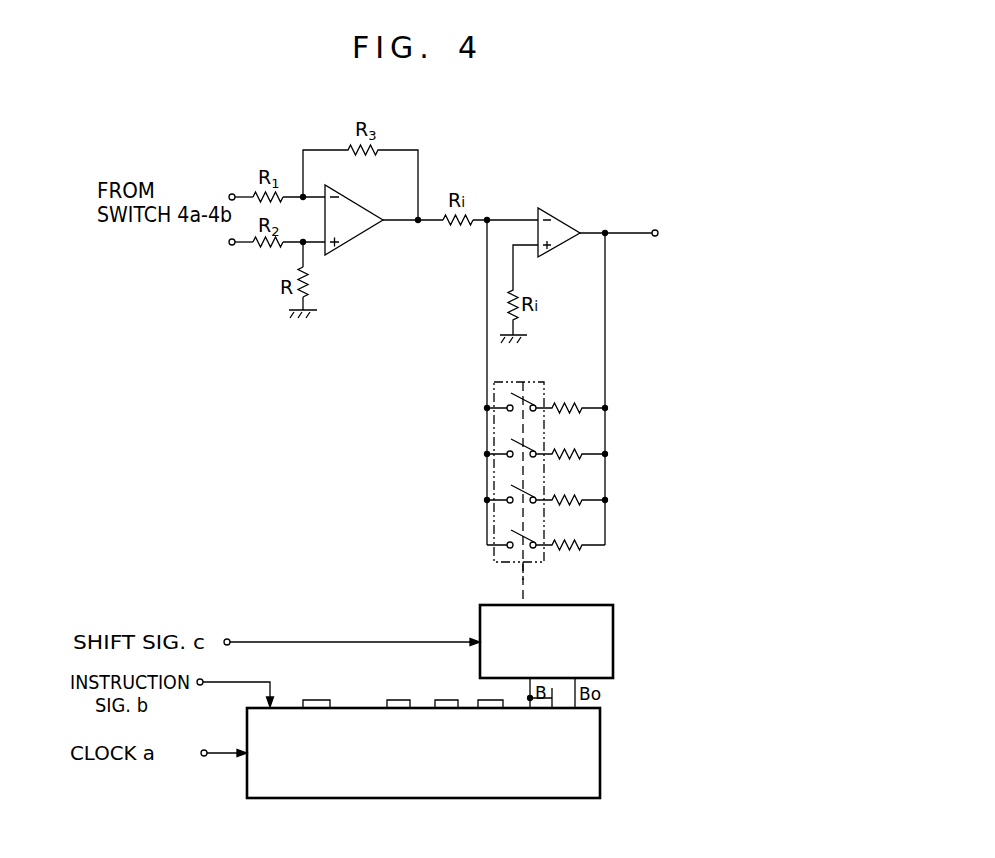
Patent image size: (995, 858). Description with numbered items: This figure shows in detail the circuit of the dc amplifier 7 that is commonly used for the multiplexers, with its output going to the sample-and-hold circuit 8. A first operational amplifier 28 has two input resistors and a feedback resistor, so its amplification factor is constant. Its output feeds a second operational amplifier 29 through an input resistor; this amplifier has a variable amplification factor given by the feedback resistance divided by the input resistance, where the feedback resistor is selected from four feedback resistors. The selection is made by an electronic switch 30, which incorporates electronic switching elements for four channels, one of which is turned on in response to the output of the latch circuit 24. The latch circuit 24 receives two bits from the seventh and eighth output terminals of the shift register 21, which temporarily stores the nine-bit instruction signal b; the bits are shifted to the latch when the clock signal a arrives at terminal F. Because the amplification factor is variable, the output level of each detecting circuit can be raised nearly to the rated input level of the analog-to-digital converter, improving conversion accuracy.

The dc amplifier 7 is at (615, 190).
The sample-and-hold circuit 8 is at (730, 242).
The shift register 21 is at (600, 772).
The latch circuit 24 is at (613, 632).
The operational amplifier 28 is at (373, 229).
The operational amplifier 29 is at (561, 217).
The electronic switch 30 is at (488, 433).